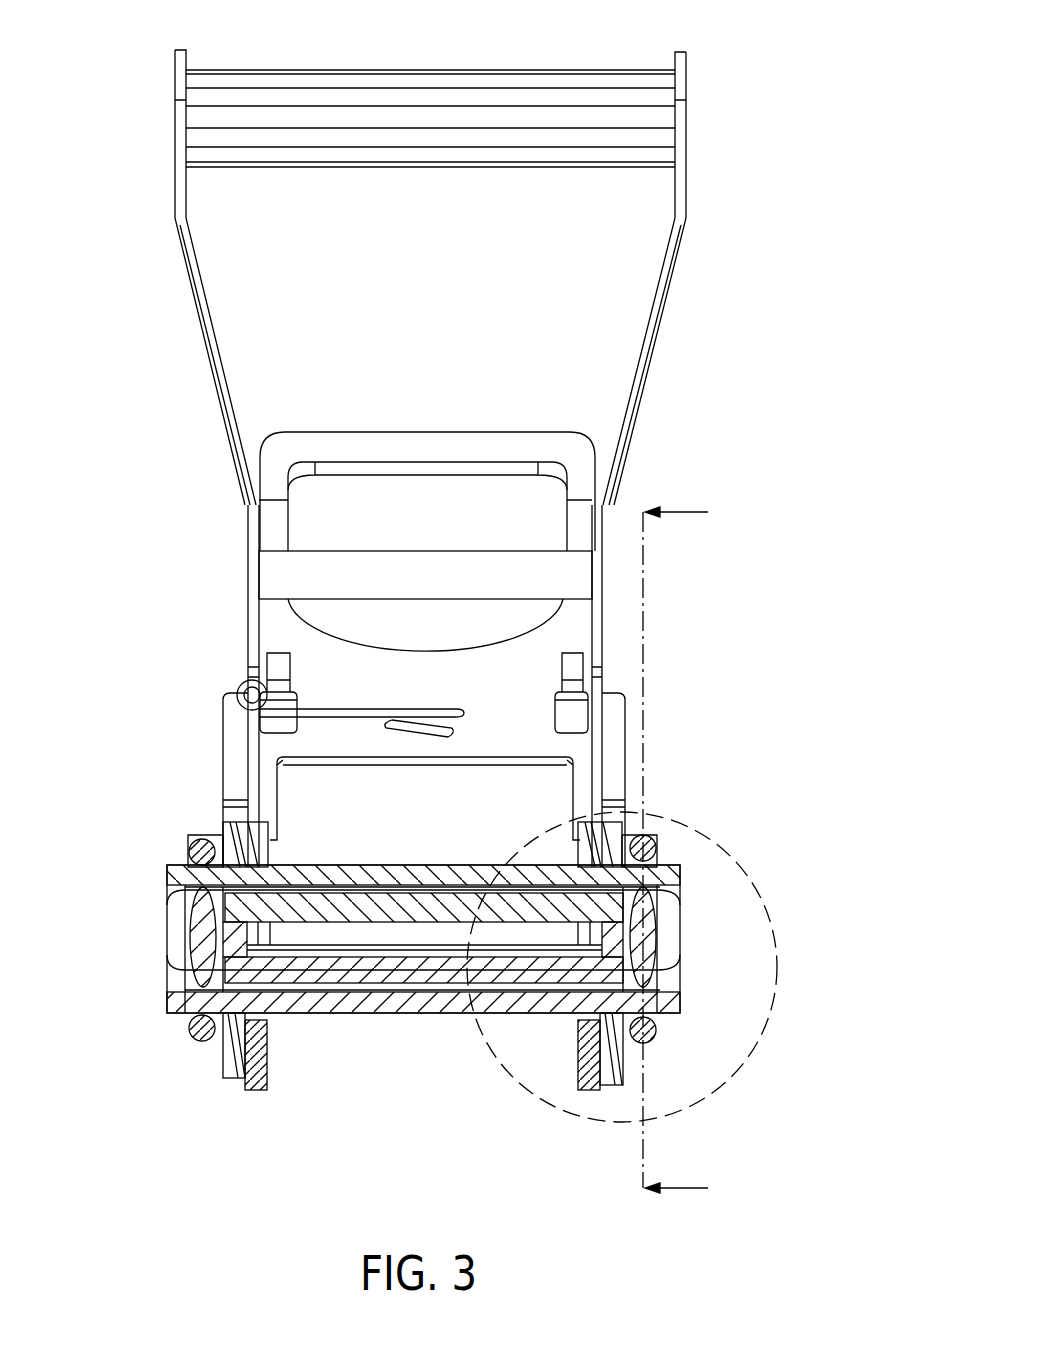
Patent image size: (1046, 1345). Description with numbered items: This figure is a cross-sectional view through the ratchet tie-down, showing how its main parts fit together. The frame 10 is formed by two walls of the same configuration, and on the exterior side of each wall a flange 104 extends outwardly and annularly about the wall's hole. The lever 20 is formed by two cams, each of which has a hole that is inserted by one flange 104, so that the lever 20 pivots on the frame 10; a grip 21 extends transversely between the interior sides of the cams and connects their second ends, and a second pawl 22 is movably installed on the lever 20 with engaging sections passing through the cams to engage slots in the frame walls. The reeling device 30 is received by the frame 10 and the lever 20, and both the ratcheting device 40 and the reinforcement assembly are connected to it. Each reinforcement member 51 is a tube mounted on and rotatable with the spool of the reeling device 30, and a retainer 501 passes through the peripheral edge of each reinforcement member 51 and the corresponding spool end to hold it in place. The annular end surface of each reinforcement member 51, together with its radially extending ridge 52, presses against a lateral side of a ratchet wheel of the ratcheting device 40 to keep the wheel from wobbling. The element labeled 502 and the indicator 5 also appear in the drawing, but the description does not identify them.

The frame 10 is at (268, 1062).
The flange 104 is at (258, 1018).
The lever 20 is at (665, 272).
The grip 21 is at (438, 98).
The second pawl 22 is at (275, 617).
The reeling device 30 is at (680, 880).
The ratcheting device 40 is at (610, 860).
The reinforcement member 51 is at (662, 868).
The retainer 501 is at (640, 972).
The end cap 502 is at (665, 850).
The ridge 52 is at (645, 835).
The section line 5- 5 is at (622, 851).